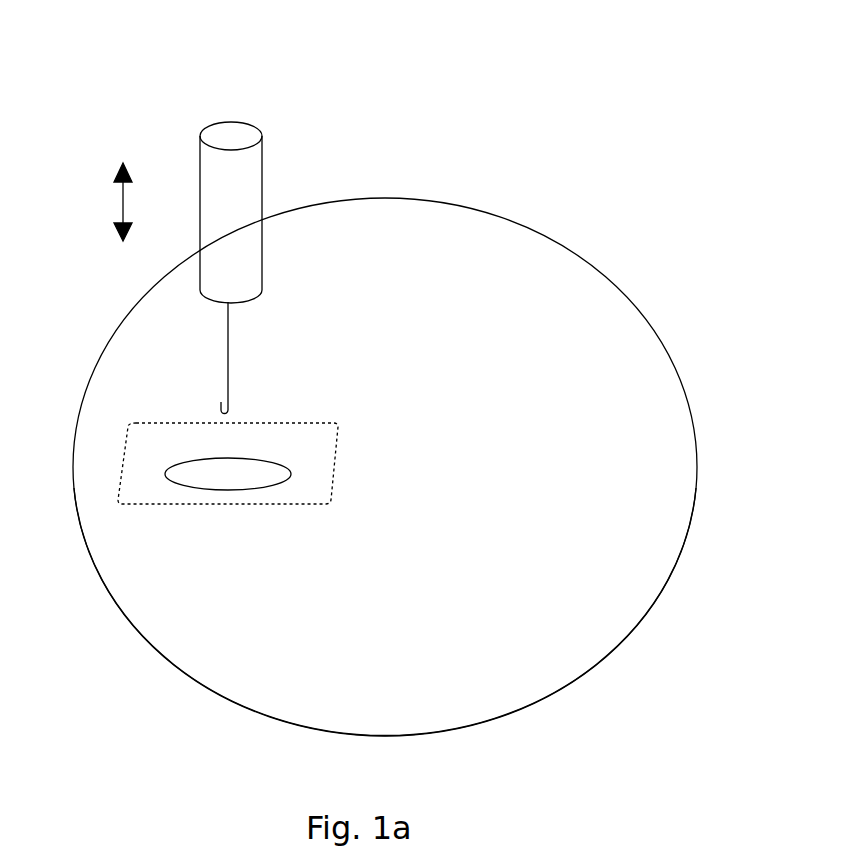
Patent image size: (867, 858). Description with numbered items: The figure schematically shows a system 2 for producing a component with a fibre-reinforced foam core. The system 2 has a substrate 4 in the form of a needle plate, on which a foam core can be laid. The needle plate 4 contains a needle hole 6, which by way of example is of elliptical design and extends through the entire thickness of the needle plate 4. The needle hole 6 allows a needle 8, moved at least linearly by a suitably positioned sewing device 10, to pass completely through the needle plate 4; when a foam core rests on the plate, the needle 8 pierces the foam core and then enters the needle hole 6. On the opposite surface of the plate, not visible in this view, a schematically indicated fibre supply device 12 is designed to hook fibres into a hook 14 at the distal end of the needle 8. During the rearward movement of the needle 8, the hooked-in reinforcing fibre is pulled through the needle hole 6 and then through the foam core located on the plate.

The system 2 is at (373, 103).
The substrate 4 is at (414, 208).
The needle hole 6 is at (233, 472).
The needle 8 is at (232, 337).
The sewing device 10 is at (220, 170).
The fibre supply device 12 is at (313, 437).
The hook 14 is at (215, 393).